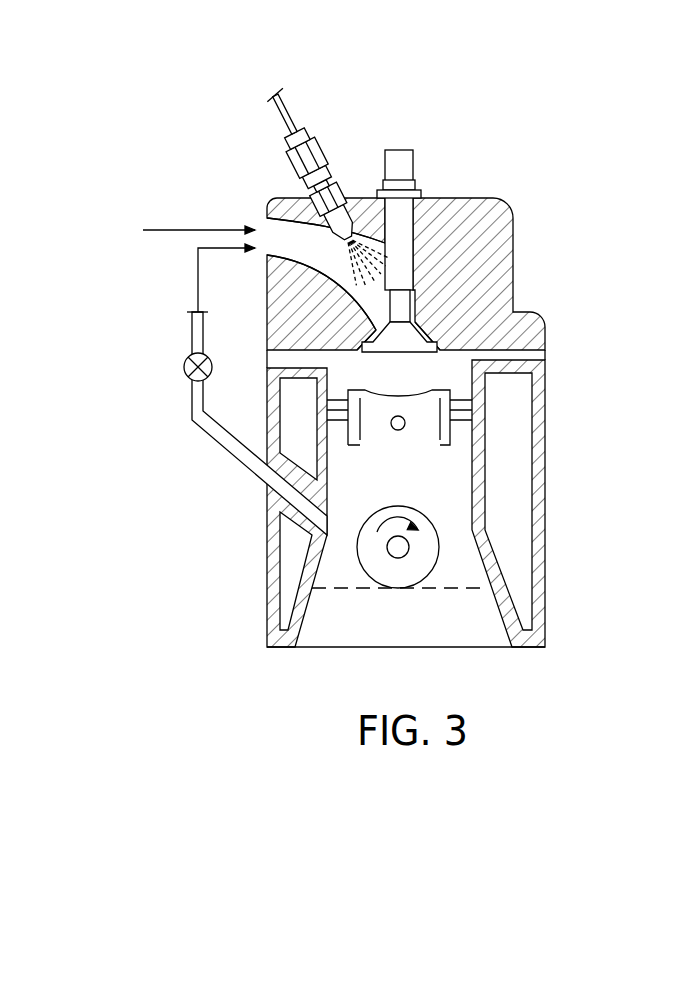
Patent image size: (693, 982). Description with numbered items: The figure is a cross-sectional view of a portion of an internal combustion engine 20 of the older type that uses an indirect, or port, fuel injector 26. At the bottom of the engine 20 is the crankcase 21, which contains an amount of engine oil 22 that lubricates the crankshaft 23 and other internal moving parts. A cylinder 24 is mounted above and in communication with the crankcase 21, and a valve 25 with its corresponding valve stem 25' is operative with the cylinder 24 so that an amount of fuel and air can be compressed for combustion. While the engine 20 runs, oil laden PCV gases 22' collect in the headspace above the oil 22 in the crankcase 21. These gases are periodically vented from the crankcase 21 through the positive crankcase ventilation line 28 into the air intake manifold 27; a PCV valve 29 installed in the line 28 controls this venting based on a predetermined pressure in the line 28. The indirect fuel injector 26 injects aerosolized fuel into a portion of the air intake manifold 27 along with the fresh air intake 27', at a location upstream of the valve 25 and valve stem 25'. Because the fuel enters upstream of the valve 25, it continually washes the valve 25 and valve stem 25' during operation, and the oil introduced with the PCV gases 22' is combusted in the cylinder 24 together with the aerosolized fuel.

The internal combustion engine 20 is at (502, 140).
The crankcase 21 is at (547, 600).
The engine oil 22 is at (398, 613).
The oil laden PCV gases 22' is at (399, 441).
The crankshaft 23 is at (373, 580).
The cylinder 24 is at (452, 437).
The valve 25 is at (296, 294).
The valve stem 25' is at (465, 298).
The indirect fuel injector 26 is at (346, 198).
The air intake manifold 27 is at (326, 235).
The fresh air intake 27' is at (182, 265).
The positive crankcase ventilation line 28 is at (222, 443).
The PCV valve 29 is at (184, 367).